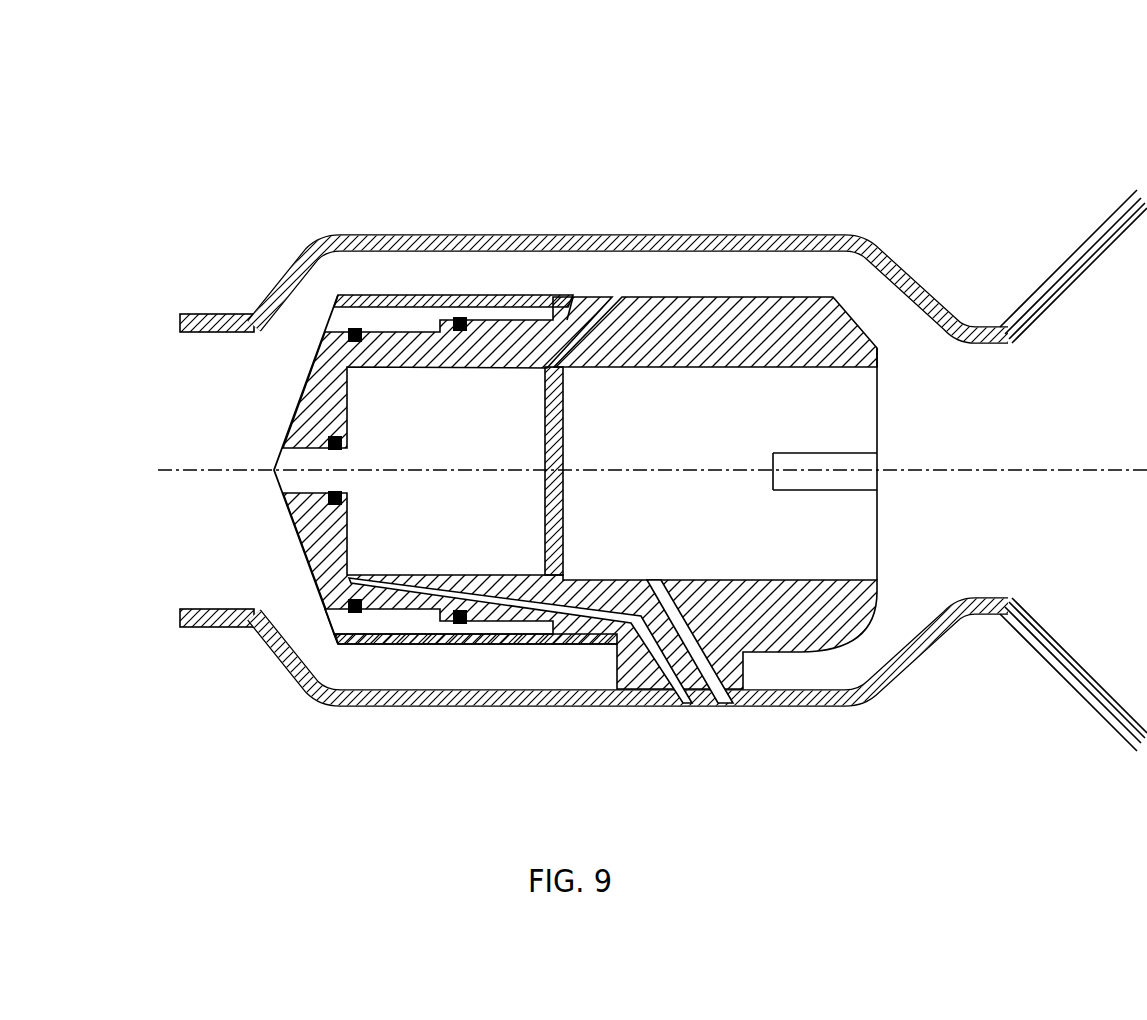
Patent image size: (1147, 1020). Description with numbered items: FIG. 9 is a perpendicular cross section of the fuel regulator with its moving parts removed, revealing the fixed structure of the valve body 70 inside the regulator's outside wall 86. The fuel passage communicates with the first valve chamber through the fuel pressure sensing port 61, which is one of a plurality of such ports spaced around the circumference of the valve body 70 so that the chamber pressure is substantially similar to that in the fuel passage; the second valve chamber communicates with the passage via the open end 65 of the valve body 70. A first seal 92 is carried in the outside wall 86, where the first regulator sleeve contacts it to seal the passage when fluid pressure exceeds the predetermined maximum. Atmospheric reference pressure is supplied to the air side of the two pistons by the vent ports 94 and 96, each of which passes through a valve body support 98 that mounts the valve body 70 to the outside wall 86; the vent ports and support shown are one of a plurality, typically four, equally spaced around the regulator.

The outside wall 86 is at (542, 236).
The fuel pressure sensing port 61 is at (601, 307).
The valve body 70 is at (712, 316).
The open end 65 is at (862, 543).
The first seal 92 is at (258, 333).
The vent port 94 is at (693, 703).
The vent port 96 is at (722, 703).
The valve body support 98 is at (743, 653).